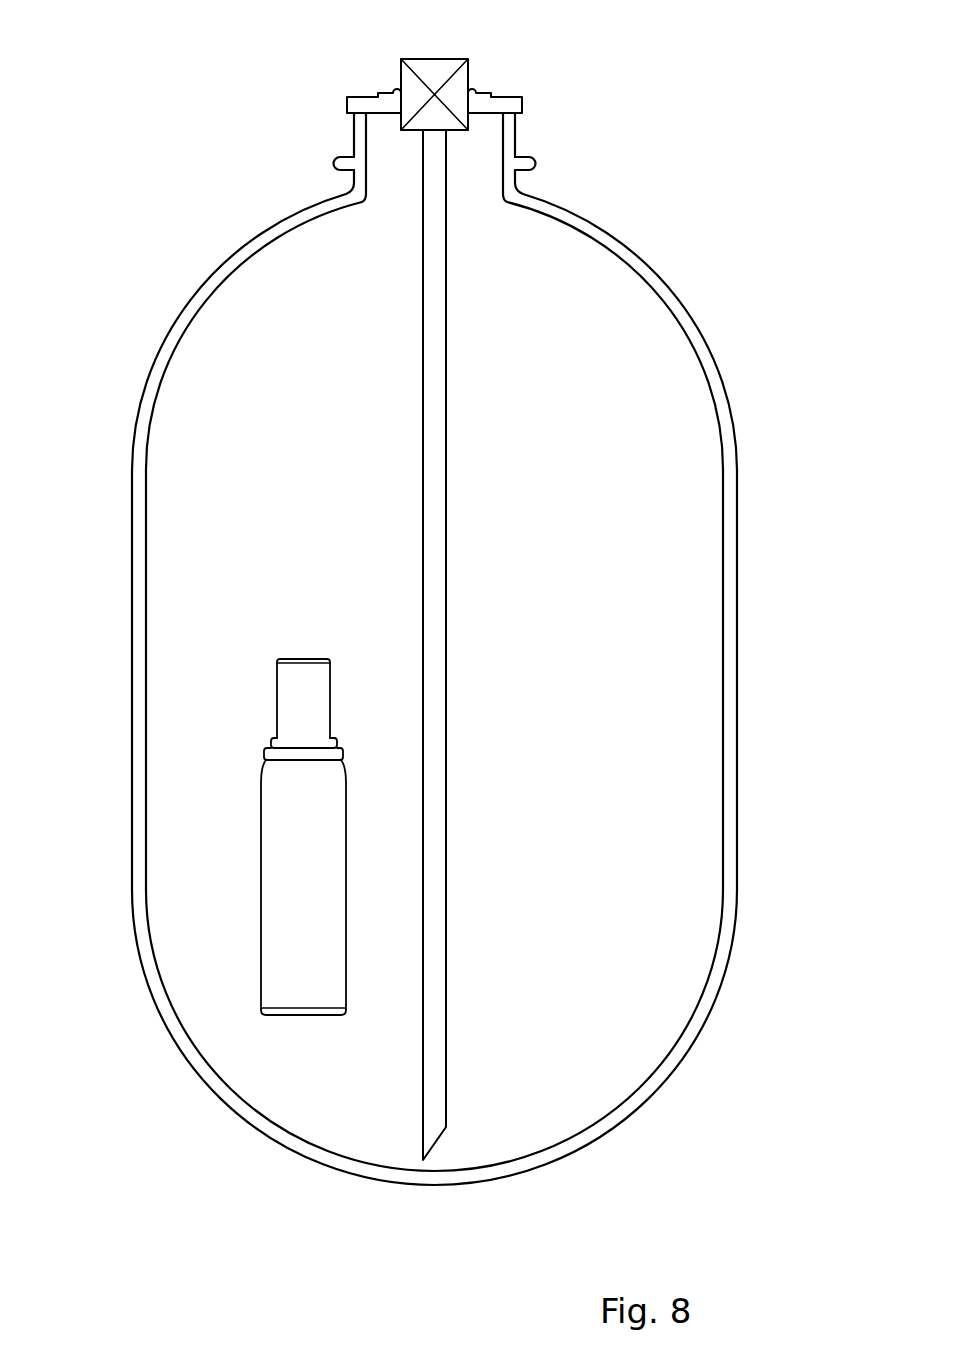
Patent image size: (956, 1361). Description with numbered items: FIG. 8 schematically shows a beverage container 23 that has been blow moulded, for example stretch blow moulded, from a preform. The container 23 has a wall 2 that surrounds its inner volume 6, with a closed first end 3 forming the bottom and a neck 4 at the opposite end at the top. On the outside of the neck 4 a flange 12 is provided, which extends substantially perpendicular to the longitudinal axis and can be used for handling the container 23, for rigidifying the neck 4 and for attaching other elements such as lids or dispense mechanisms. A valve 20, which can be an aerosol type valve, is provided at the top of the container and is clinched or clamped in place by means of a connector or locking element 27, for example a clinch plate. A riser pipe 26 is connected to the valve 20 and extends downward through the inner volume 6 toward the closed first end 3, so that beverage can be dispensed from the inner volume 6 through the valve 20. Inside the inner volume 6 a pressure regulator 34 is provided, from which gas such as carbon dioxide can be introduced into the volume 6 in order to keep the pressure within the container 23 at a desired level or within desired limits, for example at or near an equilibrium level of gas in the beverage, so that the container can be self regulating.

The wall 2 is at (479, 631).
The closed first end 3 is at (434, 1187).
The neck portion 4 is at (517, 128).
The inner volume 6 is at (289, 497).
The flange 12 is at (537, 163).
The valve 20 is at (434, 72).
The container 23 is at (748, 416).
The riser pipe 26 is at (447, 482).
The connector or locking element 27 is at (444, 67).
The pressure regulator 34 is at (286, 814).